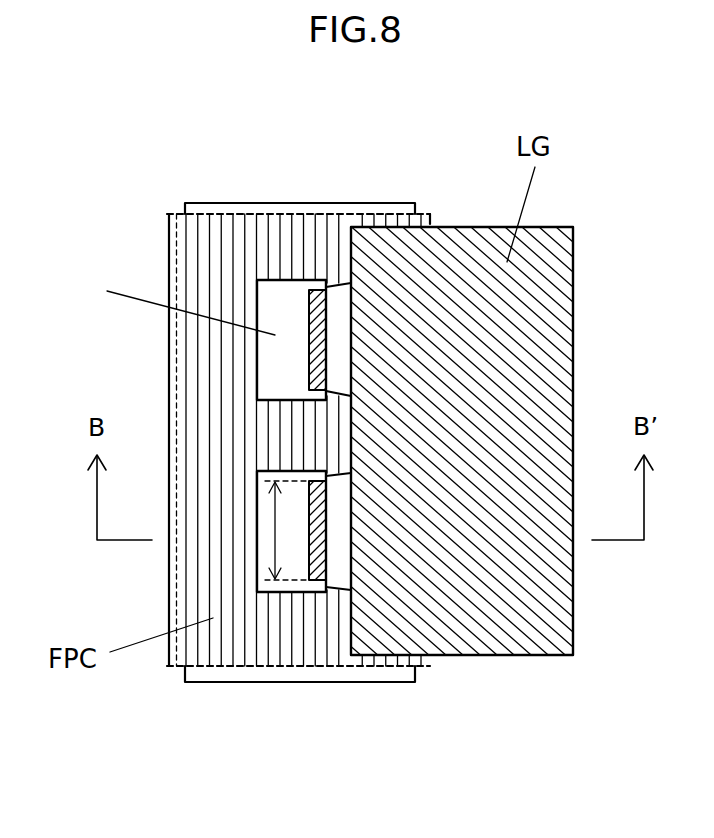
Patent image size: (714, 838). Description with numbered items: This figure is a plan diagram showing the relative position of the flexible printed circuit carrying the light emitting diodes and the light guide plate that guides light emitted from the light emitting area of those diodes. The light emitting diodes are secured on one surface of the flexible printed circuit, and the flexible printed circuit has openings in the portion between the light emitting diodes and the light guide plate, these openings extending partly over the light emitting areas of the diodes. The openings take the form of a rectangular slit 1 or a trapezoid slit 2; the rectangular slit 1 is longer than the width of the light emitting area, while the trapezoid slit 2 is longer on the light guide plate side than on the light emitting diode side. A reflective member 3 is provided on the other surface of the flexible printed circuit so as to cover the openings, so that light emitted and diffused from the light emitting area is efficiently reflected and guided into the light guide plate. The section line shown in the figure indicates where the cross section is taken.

The rectangular slit 1 is at (341, 558).
The trapezoid slit 2 is at (341, 312).
The reflective member 3 is at (383, 208).